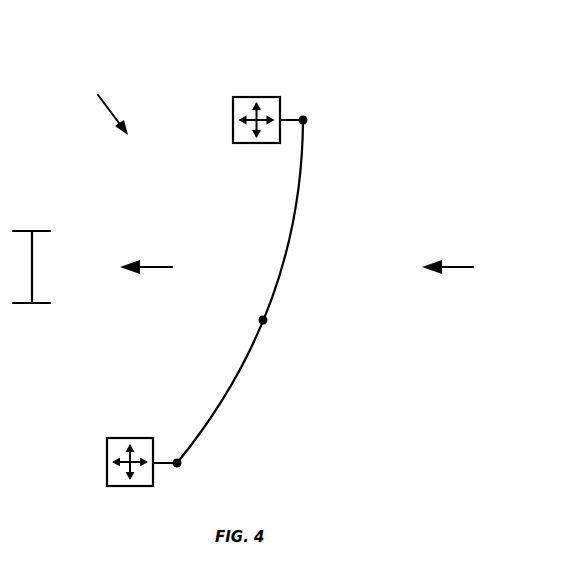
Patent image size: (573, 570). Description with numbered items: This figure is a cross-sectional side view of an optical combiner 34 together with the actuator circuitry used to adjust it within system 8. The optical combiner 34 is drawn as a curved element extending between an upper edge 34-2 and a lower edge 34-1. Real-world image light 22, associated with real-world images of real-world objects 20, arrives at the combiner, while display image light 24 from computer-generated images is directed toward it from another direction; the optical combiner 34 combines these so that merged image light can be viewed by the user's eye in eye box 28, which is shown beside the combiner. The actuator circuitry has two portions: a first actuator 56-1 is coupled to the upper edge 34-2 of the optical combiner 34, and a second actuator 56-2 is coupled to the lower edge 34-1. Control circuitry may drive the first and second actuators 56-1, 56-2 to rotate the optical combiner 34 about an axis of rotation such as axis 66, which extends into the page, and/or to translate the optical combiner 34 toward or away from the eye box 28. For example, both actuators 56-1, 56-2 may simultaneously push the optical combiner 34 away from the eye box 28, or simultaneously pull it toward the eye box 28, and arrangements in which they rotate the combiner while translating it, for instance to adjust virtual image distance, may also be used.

The system 8 is at (477, 57).
The real-world objects 20 is at (157, 268).
The real-world image light 22 is at (458, 268).
The display image light 24 is at (107, 112).
The eye box 28 is at (46, 231).
The optical combiner 34 is at (284, 250).
The lower edge of optical combiner 34-1 is at (181, 463).
The upper edge of optical combiner 34-2 is at (307, 120).
The first actuator 56-1 is at (233, 107).
The second actuator 56-2 is at (107, 449).
The axis of rotation 66 is at (267, 320).